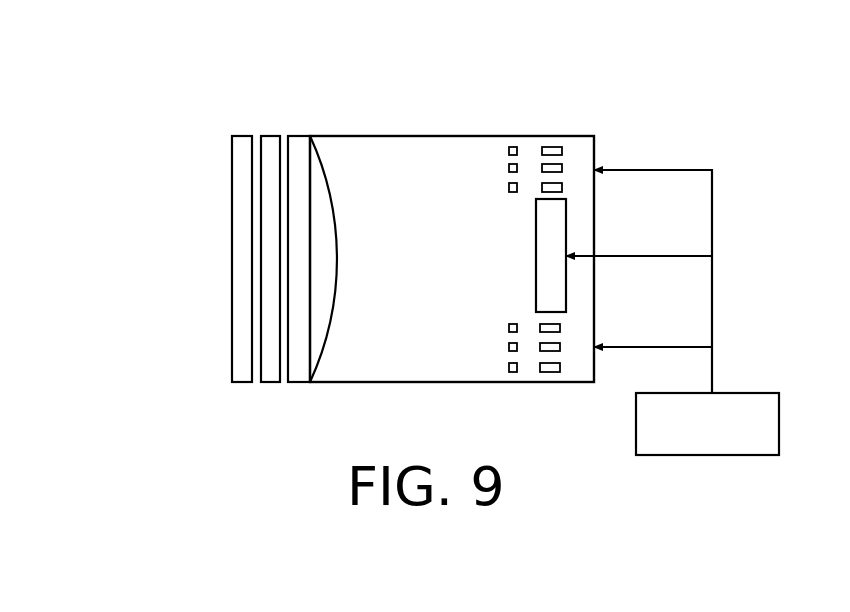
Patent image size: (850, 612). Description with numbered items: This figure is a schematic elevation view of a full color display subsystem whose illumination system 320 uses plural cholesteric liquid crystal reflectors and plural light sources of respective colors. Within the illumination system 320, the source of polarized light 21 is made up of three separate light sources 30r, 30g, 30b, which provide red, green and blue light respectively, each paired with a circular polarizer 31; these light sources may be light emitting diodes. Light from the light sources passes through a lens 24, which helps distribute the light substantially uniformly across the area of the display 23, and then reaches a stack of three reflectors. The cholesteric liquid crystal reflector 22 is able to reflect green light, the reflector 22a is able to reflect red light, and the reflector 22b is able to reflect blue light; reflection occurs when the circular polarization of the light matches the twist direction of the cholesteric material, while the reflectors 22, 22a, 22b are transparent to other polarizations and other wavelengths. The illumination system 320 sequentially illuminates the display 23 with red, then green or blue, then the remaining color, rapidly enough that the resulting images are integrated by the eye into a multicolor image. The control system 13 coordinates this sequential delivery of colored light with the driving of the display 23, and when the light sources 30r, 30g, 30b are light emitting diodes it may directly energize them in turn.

The control system 13 is at (779, 448).
The source of polarized light 21 is at (468, 198).
The cholesteric liquid crystal reflector 22 is at (297, 136).
The reflector 22a is at (270, 136).
The reflector 22b is at (232, 150).
The display 23 is at (519, 255).
The lens 24 is at (324, 170).
The red light source 30r is at (562, 151).
The green light source 30g is at (562, 168).
The blue light source 30b is at (562, 188).
The circular polarizer 31 is at (509, 151).
The illumination system 320 is at (552, 130).